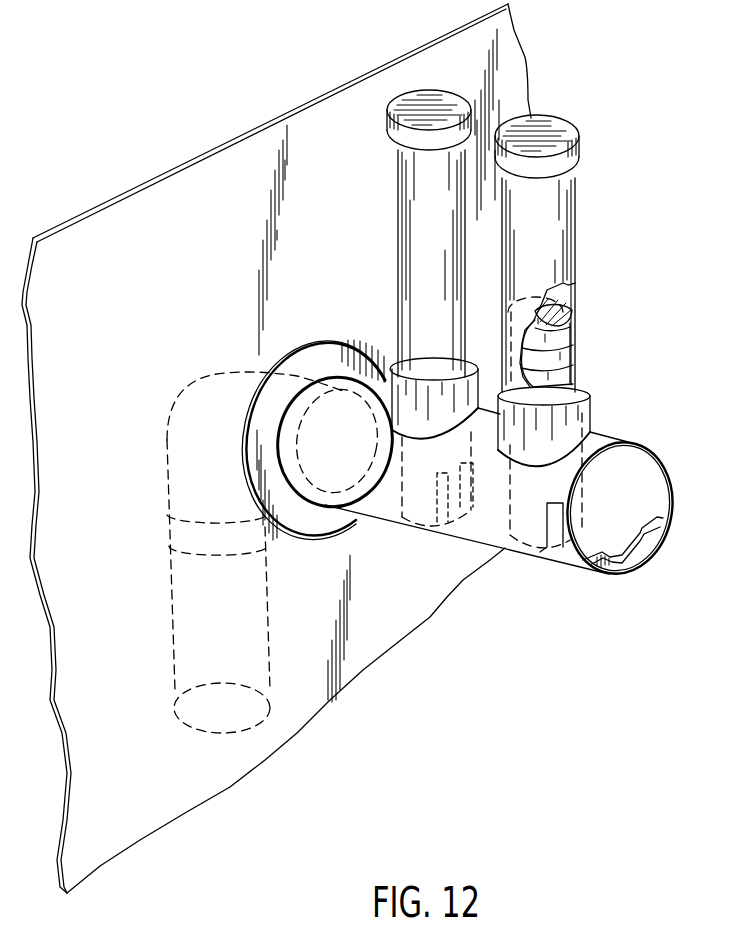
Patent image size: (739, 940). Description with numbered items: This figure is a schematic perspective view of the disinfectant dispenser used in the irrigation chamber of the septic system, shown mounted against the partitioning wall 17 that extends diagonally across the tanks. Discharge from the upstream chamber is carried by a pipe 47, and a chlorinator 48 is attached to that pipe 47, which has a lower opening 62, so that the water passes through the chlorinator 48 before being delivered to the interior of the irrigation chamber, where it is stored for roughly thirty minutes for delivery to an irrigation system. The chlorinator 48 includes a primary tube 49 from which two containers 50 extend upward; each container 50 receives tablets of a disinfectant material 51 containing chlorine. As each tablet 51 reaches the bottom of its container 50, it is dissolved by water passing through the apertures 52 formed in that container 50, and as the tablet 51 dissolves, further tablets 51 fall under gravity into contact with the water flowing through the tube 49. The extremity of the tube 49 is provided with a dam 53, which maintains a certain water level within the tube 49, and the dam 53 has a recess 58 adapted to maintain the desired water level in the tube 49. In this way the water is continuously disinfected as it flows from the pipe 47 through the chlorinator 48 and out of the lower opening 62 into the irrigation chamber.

The partitioning wall 17 is at (204, 246).
The pipe 47 is at (167, 421).
The chlorinator 48 is at (552, 716).
The primary tube 49 is at (430, 520).
The container 50 is at (443, 176).
The tablet of disinfectant material 51 is at (561, 328).
The aperture 52 is at (445, 522).
The dam 53 is at (649, 536).
The recess 58 is at (627, 569).
The lower opening 62 is at (192, 732).